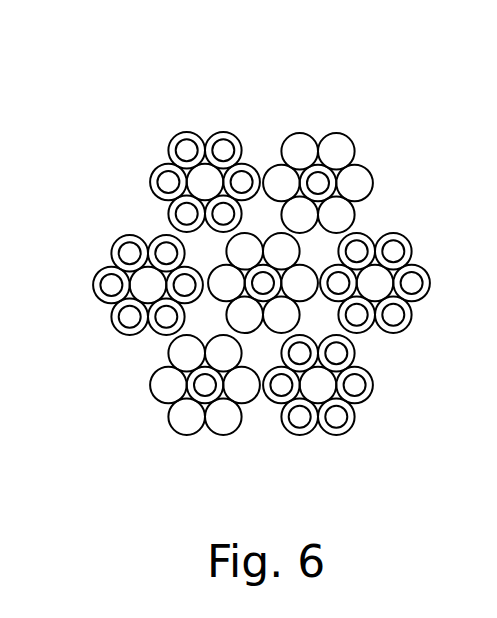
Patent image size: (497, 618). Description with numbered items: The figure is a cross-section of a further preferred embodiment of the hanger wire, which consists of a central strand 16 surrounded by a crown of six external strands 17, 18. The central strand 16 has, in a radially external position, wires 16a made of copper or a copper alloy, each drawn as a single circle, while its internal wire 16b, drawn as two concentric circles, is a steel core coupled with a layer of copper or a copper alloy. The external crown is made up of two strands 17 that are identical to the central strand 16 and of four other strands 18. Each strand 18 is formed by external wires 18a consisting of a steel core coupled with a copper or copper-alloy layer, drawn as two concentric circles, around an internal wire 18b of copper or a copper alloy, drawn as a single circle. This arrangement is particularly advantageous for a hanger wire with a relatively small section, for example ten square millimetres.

The central strand 16 is at (316, 367).
The wires 16a is at (246, 325).
The internal wire 16b is at (266, 288).
The strands 17 is at (356, 133).
The strands 18 is at (217, 131).
The external wires 18a is at (175, 138).
The internal wire 18b is at (173, 201).